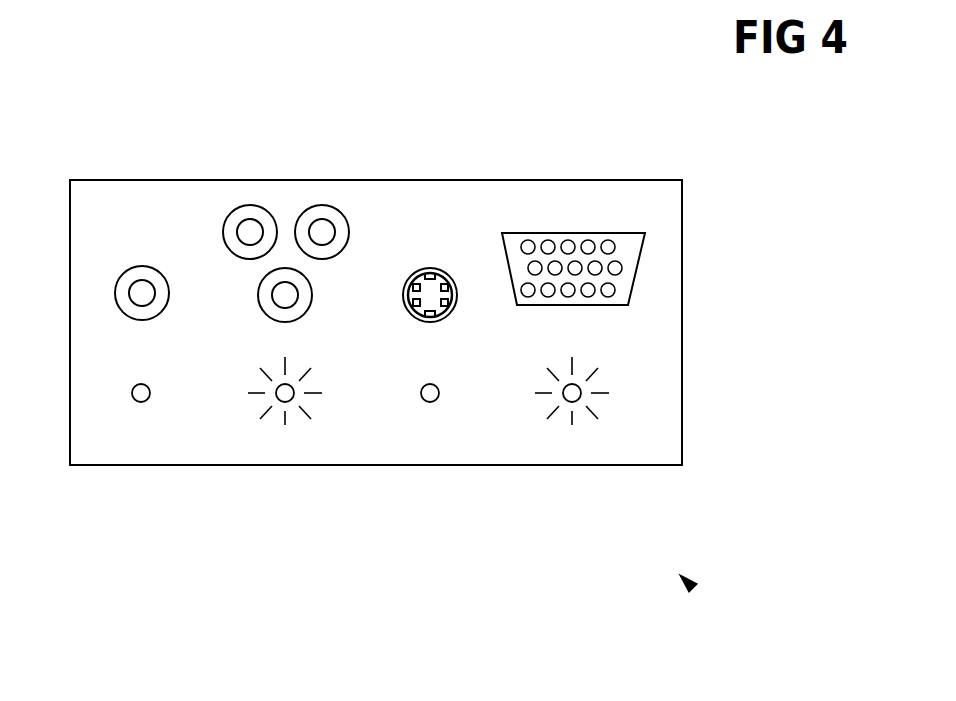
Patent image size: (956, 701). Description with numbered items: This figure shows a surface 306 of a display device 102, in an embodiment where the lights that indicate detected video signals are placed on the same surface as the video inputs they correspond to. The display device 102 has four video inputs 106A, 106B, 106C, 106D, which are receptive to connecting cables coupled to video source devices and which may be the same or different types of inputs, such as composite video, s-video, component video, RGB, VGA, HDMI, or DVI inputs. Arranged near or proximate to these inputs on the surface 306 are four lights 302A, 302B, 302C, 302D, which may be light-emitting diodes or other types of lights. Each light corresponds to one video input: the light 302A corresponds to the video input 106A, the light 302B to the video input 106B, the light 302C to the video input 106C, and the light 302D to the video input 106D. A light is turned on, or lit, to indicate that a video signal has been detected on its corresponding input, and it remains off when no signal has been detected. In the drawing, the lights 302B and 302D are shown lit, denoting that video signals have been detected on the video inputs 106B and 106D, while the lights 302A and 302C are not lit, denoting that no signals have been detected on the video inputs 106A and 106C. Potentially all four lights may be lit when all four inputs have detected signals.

The display device 102 is at (692, 587).
The surface 306 is at (673, 212).
The video input 106A is at (142, 258).
The video input 106B is at (287, 215).
The video input 106C is at (440, 263).
The video input 106D is at (573, 215).
The light 302A is at (141, 410).
The light 302B is at (283, 414).
The light 302C is at (430, 410).
The light 302D is at (577, 423).